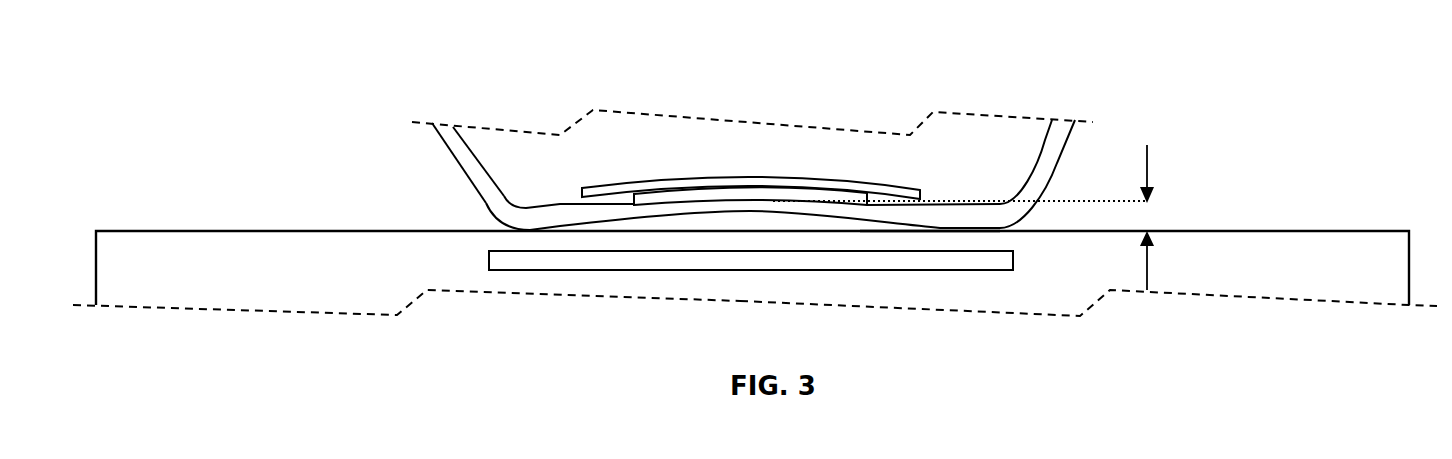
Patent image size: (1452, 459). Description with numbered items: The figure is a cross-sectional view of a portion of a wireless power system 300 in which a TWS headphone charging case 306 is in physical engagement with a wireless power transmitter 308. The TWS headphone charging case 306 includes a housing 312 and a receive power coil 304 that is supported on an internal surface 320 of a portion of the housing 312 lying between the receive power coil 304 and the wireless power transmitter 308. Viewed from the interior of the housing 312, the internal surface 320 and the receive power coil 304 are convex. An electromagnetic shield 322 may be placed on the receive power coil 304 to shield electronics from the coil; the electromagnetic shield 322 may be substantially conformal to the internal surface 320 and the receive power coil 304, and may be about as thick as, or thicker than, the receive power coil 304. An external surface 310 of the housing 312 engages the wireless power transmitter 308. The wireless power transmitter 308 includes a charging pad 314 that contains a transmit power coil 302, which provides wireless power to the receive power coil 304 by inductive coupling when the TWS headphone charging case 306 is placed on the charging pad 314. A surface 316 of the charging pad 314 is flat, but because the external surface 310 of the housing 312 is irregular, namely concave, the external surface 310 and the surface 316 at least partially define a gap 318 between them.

The wireless power system 300 is at (1195, 88).
The transmit power coil 302 is at (552, 269).
The receive power coil 304 is at (717, 159).
The TWS headphone charging case 306 is at (487, 138).
The wireless power transmitter 308 is at (1342, 243).
The external surface 310 is at (878, 230).
The housing 312 is at (468, 182).
The charging pad 314 is at (239, 230).
The surface 316 is at (612, 230).
The gap 318 is at (750, 223).
The internal surface 320 is at (608, 200).
The electromagnetic shield 322 is at (846, 180).